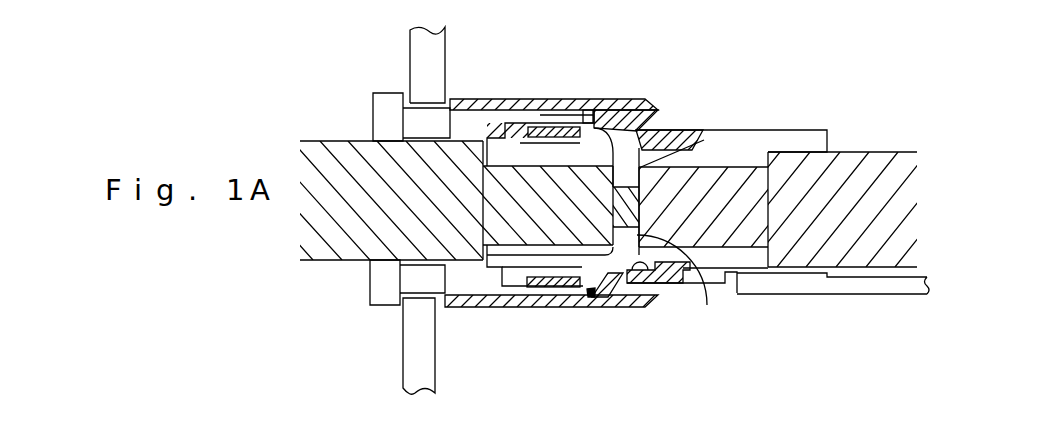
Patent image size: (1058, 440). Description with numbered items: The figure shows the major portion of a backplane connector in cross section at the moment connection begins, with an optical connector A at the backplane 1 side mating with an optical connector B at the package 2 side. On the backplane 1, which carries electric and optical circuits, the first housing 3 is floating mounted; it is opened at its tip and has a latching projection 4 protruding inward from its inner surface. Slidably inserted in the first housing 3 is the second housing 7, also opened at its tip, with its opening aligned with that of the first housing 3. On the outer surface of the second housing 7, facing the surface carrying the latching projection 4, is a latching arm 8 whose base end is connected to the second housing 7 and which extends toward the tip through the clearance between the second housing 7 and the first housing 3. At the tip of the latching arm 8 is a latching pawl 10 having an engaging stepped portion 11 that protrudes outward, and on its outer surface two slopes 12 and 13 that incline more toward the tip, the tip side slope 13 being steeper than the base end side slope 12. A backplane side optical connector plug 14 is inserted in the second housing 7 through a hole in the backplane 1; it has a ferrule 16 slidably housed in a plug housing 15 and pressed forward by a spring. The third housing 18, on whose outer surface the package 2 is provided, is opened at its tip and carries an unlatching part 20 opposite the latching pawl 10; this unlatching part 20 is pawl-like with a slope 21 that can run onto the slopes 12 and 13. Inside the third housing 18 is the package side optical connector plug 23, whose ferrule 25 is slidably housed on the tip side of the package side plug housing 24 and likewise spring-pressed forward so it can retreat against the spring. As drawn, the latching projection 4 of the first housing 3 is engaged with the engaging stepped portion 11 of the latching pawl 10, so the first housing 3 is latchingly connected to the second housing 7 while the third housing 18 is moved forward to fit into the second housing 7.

The backplane 1 is at (413, 362).
The package 2 is at (850, 290).
The first housing 3 is at (475, 96).
The latching projection 4 is at (572, 127).
The second housing 7 is at (496, 137).
The latching arm 8 is at (543, 123).
The latching pawl 10 is at (656, 213).
The engaging stepped portion 11 is at (595, 108).
The slope 12 is at (612, 108).
The slope 13 is at (625, 128).
The backplane side optical connector plug 14 is at (408, 201).
The plug housing 15 is at (345, 158).
The ferrule 16 is at (588, 114).
The third housing 18 is at (763, 130).
The unlatching part 20 is at (656, 213).
The slope 21 is at (660, 285).
The package side optical connector plug 23 is at (803, 257).
The package side plug housing 24 is at (740, 247).
The ferrule 25 is at (681, 282).
The optical connector A is at (593, 213).
The optical connector B is at (767, 215).